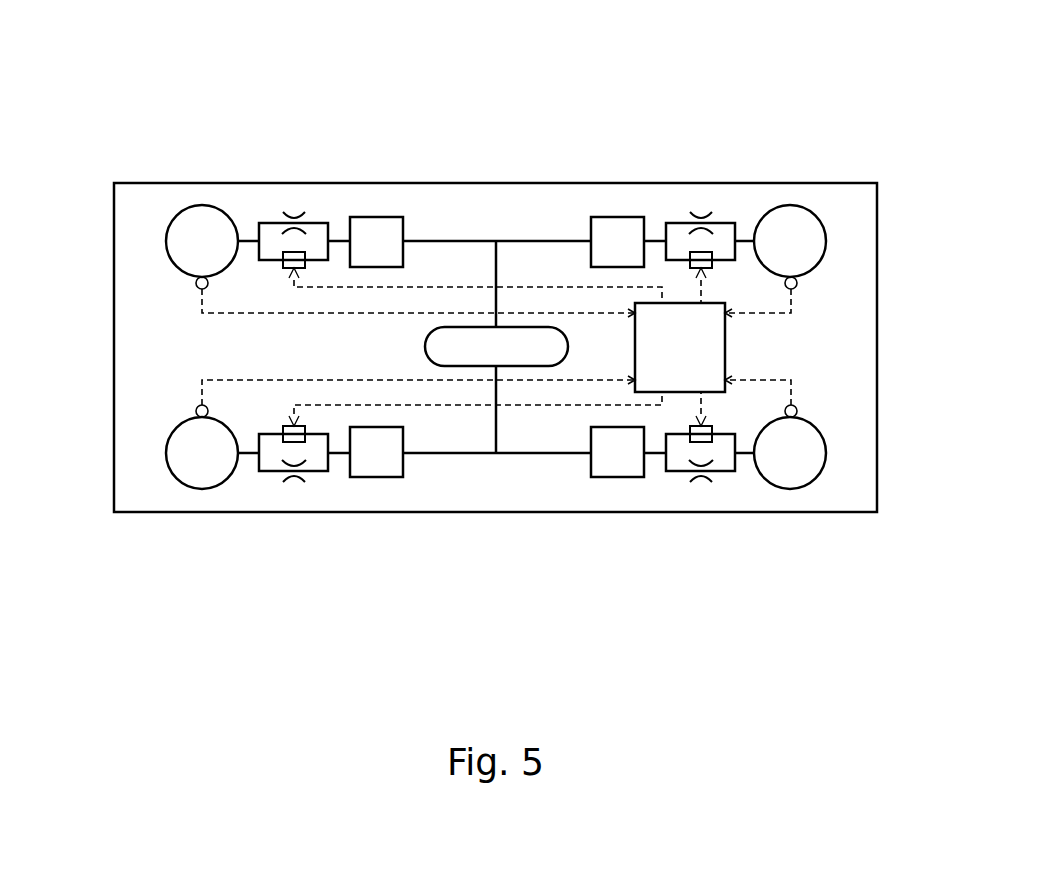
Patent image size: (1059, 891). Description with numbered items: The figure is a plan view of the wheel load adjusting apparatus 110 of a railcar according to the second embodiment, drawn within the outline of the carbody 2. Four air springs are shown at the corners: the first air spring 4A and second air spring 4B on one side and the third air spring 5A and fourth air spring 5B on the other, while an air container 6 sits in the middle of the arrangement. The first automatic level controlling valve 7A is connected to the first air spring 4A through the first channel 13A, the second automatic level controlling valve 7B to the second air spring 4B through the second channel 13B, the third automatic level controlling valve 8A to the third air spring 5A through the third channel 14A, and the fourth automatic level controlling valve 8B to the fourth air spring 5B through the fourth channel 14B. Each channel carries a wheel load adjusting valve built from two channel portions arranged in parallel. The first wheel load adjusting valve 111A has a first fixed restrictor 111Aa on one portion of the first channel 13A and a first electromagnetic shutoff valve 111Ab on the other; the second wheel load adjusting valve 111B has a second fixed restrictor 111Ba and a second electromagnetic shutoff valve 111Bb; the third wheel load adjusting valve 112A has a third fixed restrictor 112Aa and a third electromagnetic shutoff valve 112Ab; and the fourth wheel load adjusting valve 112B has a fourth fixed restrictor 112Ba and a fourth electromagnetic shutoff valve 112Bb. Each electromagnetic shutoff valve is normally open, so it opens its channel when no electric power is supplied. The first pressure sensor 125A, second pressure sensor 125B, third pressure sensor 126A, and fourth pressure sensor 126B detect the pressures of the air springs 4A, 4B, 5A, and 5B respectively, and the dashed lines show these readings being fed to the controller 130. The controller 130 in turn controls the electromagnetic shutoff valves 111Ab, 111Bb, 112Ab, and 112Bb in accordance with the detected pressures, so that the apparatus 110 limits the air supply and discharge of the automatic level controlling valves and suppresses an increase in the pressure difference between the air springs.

The carbody 2 is at (114, 207).
The wheel load adjusting apparatus 110 is at (856, 250).
The first air spring 4A is at (822, 215).
The second air spring 4B is at (822, 472).
The third air spring 5A is at (169, 219).
The fourth air spring 5B is at (170, 475).
The air container 6 is at (425, 345).
The first automatic level controlling valve 7A is at (613, 217).
The second automatic level controlling valve 7B is at (613, 478).
The third automatic level controlling valve 8A is at (380, 217).
The fourth automatic level controlling valve 8B is at (378, 478).
The first channel 13A is at (737, 240).
The second channel 13B is at (737, 460).
The third channel 14A is at (248, 235).
The fourth channel 14B is at (247, 472).
The first wheel load adjusting valve 111A is at (651, 154).
The first fixed restrictor 111Aa is at (701, 216).
The first electromagnetic shutoff valve 111Ab is at (642, 177).
The second wheel load adjusting valve 111B is at (650, 540).
The second fixed restrictor 111Ba is at (701, 484).
The second electromagnetic shutoff valve 111Bb is at (690, 442).
The third wheel load adjusting valve 112A is at (461, 154).
The third fixed restrictor 112Aa is at (294, 216).
The third electromagnetic shutoff valve 112Ab is at (306, 252).
The fourth wheel load adjusting valve 112B is at (459, 540).
The fourth fixed restrictor 112Ba is at (292, 484).
The fourth electromagnetic shutoff valve 112Bb is at (305, 442).
The first pressure sensor 125A is at (797, 283).
The second pressure sensor 125B is at (797, 411).
The third pressure sensor 126A is at (196, 283).
The fourth pressure sensor 126B is at (196, 411).
The controller 130 is at (725, 345).